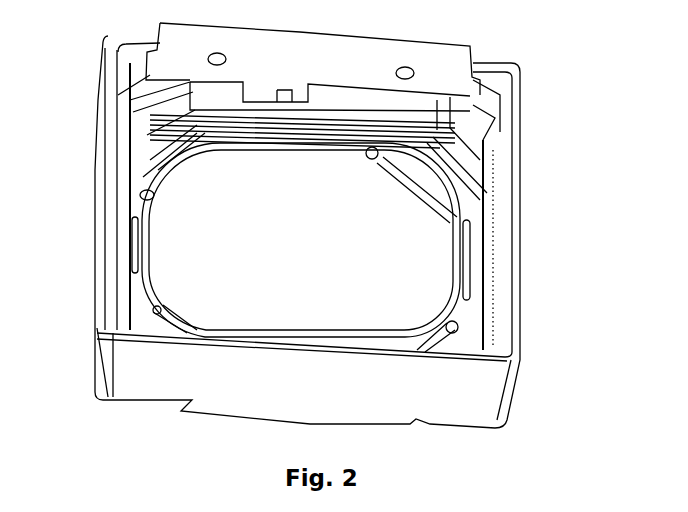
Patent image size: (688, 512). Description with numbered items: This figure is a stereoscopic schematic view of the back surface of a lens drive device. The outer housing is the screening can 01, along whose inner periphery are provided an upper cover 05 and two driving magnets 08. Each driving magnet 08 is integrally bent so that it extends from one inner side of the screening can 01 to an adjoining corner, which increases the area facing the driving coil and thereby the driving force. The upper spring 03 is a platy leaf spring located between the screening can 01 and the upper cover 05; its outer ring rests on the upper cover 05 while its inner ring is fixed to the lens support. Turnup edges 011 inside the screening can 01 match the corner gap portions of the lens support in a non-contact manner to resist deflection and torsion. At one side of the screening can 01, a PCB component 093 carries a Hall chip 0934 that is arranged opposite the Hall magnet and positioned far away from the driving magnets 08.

The screening can 01 is at (463, 403).
The upper spring 03 is at (150, 293).
The upper cover 05 is at (500, 139).
The driving magnets 08 is at (125, 206).
The turnup edges 011 is at (195, 142).
The PCB component 093 is at (447, 63).
The Hall chip 0934 is at (377, 113).